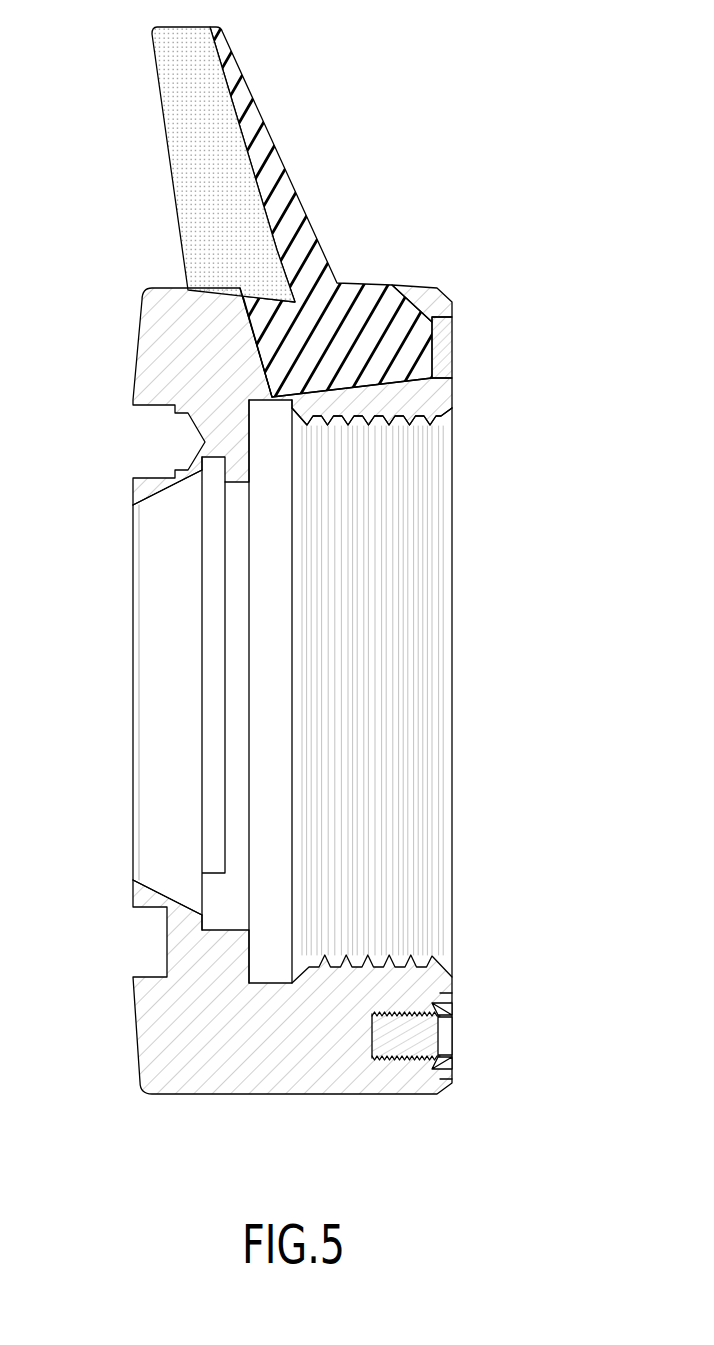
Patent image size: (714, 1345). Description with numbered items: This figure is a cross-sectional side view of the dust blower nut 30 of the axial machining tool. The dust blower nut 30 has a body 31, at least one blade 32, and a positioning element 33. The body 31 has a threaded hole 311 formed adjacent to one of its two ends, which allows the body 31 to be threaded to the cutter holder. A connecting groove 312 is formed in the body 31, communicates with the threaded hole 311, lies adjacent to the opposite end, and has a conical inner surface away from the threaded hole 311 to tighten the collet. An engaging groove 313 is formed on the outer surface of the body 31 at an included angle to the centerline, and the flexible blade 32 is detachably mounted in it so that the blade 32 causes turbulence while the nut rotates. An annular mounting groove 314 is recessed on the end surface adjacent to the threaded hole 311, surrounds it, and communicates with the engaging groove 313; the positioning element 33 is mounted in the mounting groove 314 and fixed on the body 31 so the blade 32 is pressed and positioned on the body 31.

The dust blower nut 30 is at (319, 557).
The body 31 is at (295, 659).
The blade 32 is at (168, 121).
The positioning element 33 is at (442, 357).
The threaded hole 311 is at (403, 958).
The connecting groove 312 is at (162, 893).
The engaging groove 313 is at (259, 326).
The mounting groove 314 is at (452, 326).